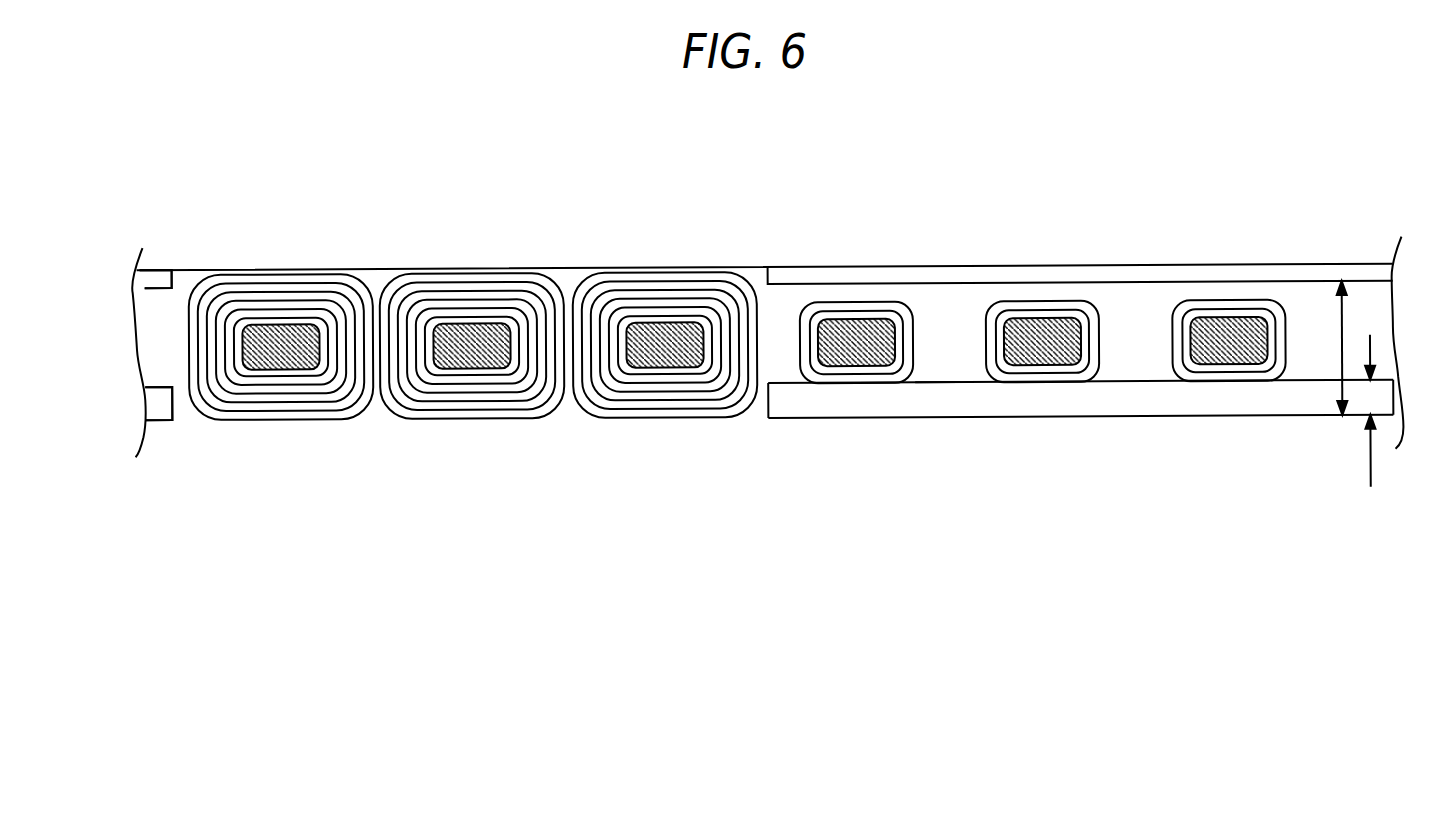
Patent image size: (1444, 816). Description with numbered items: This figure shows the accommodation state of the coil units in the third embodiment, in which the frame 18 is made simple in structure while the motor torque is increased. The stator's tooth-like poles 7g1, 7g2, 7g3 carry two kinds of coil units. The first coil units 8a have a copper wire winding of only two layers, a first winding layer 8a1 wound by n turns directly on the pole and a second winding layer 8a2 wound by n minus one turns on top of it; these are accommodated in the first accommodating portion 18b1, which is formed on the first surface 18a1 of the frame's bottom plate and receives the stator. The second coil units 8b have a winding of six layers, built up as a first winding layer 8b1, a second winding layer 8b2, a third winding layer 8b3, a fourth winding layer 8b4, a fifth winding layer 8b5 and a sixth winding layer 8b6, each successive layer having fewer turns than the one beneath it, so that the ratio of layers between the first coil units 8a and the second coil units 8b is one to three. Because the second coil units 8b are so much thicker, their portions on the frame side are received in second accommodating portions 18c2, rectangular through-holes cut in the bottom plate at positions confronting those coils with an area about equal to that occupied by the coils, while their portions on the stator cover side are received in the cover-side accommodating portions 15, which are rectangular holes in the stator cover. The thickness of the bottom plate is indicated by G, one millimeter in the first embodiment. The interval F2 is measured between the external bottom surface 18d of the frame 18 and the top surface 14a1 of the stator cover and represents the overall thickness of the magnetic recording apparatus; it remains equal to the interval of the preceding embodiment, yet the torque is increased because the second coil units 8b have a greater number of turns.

The cover-side accommodating portion 15 is at (177, 294).
The second accommodating portion 18c2 is at (173, 405).
The tooth-like pole 7g3 is at (285, 330).
The tooth-like pole 7g2 is at (448, 328).
The tooth-like pole 7g1 is at (637, 328).
The second coil unit 8b is at (646, 340).
The first winding layer 8b1 is at (723, 403).
The second winding layer 8b2 is at (675, 377).
The third winding layer 8b3 is at (615, 391).
The fourth winding layer 8b4 is at (703, 294).
The fifth winding layer 8b5 is at (667, 281).
The sixth winding layer 8b6 is at (593, 281).
The first coil unit 8a is at (1222, 287).
The first winding layer 8a1 is at (1267, 326).
The second winding layer 8a2 is at (1250, 309).
The top surface of the stator cover 14a1 is at (1358, 278).
The frame 18 is at (1106, 419).
The first surface of the bottom plate 18a1 is at (1380, 383).
The first accommodating portion 18b1 is at (937, 361).
The external bottom surface 18d is at (1265, 420).
The interval F2 is at (1326, 348).
The thickness of the bottom plate G is at (1363, 412).